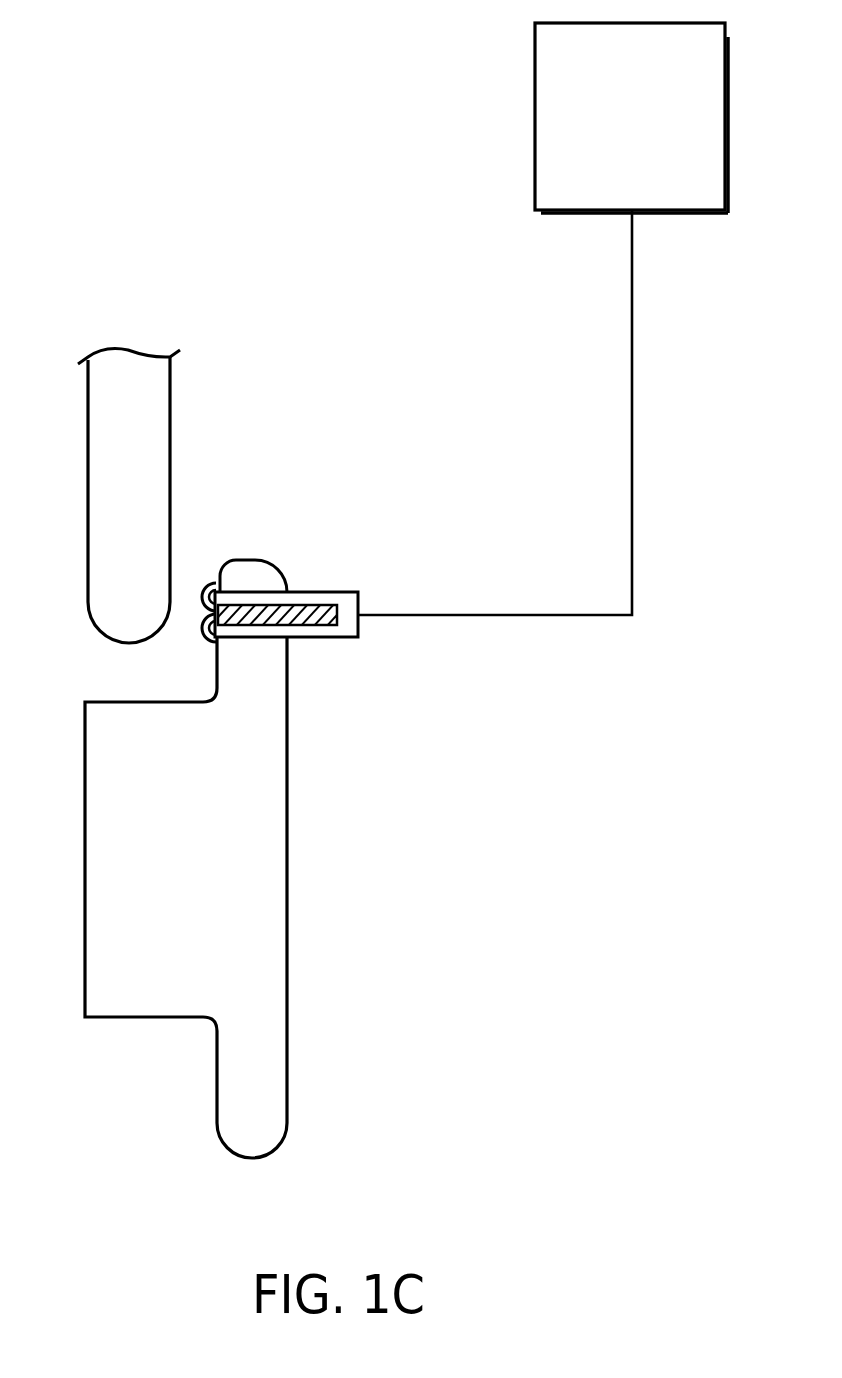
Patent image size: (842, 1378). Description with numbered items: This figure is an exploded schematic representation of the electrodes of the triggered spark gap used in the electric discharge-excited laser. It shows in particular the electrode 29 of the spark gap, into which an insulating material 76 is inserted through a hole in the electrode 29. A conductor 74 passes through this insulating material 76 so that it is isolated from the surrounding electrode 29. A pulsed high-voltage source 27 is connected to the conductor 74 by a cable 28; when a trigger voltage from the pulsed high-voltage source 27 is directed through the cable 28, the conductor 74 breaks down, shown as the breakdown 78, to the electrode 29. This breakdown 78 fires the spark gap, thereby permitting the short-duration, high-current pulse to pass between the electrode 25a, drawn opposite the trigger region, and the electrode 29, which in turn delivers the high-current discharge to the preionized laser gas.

The pulsed high-voltage source 27 is at (602, 142).
The cable 28 is at (633, 455).
The electrode 25a is at (130, 492).
The electrode 29 is at (273, 893).
The conductor 74 is at (307, 615).
The insulating material 76 is at (360, 628).
The breakdown 78 is at (207, 583).